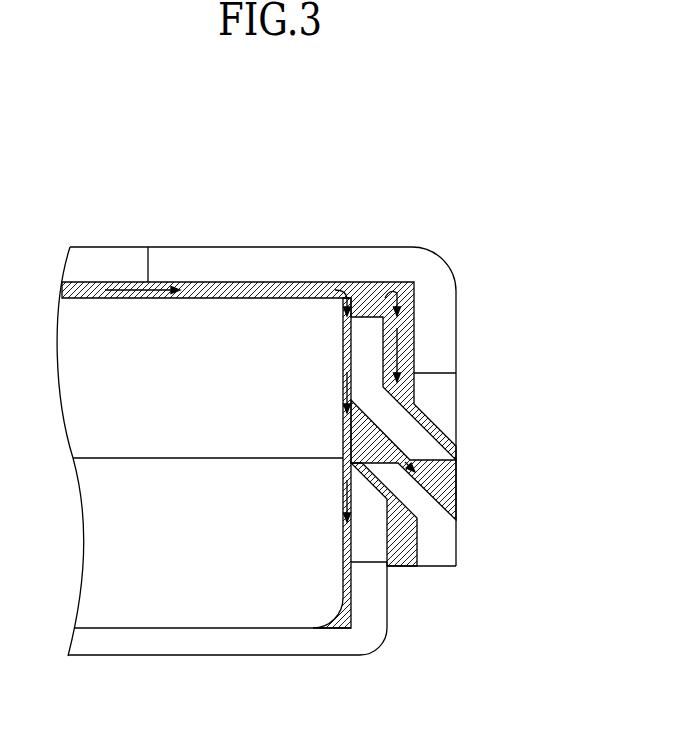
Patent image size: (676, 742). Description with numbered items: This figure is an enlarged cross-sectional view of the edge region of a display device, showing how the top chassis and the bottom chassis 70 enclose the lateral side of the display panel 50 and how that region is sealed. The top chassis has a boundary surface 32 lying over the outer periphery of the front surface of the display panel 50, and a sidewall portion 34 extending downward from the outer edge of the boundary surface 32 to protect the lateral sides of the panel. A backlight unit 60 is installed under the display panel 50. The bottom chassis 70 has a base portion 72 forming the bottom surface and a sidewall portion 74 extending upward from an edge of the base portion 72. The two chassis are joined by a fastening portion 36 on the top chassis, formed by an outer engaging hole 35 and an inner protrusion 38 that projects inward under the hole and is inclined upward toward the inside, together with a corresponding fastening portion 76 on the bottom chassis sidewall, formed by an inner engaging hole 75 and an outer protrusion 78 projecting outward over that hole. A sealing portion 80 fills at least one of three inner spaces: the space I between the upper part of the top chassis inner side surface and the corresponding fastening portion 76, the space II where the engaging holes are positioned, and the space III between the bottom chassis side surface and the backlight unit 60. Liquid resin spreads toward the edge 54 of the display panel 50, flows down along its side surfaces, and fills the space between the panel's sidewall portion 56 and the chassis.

The boundary surface 32 is at (312, 265).
The sidewall portion 34 is at (435, 293).
The outer engaging hole 35 is at (440, 469).
The fastening portion 36 is at (437, 543).
The inner protrusion 38 is at (417, 498).
The display panel 50 is at (213, 325).
The edge 54 is at (362, 285).
The sidewall portion 56 is at (343, 392).
The backlight unit 60 is at (148, 587).
The bottom chassis 70 is at (376, 657).
The base portion 72 is at (249, 642).
The sidewall portion 74 is at (370, 617).
The inner engaging hole 75 is at (365, 440).
The corresponding fastening portion 76 is at (368, 348).
The outer protrusion 78 is at (417, 440).
The sealing portion 80 is at (387, 285).
The space I is at (403, 323).
The space II is at (372, 427).
The space III is at (350, 583).